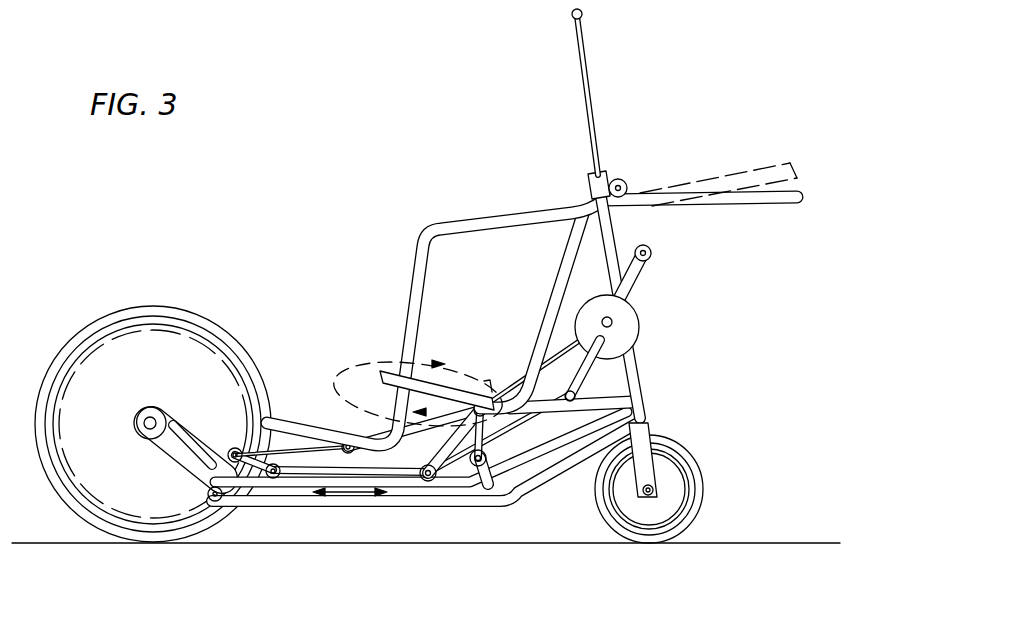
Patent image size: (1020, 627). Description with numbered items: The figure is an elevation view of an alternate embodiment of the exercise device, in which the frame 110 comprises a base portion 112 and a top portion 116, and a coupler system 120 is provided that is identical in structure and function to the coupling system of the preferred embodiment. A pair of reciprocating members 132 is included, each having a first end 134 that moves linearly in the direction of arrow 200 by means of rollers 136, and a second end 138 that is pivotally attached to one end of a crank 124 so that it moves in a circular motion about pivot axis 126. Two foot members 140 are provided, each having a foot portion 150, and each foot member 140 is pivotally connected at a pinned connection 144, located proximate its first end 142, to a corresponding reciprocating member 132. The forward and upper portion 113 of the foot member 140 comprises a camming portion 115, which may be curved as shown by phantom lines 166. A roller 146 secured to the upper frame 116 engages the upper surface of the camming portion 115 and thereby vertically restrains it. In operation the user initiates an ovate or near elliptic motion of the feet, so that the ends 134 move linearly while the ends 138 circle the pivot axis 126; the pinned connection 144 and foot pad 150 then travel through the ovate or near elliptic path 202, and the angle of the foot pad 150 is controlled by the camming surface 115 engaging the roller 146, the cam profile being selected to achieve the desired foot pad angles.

The frame 110 is at (645, 376).
The base portion 112 is at (333, 500).
The forward and upper portion 113 is at (537, 301).
The camming portion 115 is at (522, 210).
The top portion 116 is at (678, 307).
The coupler system 120 is at (632, 352).
The crank 124 is at (653, 327).
The pivot axis 126 is at (614, 320).
The reciprocating member 132 is at (518, 365).
The first end 134 is at (292, 473).
The roller 136 is at (385, 437).
The second end 138 is at (652, 260).
The foot member 140 is at (537, 301).
The first end 142 is at (412, 350).
The pinned connection 144 is at (349, 441).
The roller 146 is at (623, 181).
The foot portion 150 is at (537, 302).
The phantom lines 166 is at (760, 173).
The arrow 200 is at (378, 498).
The ovate or near elliptic path 202 is at (470, 358).